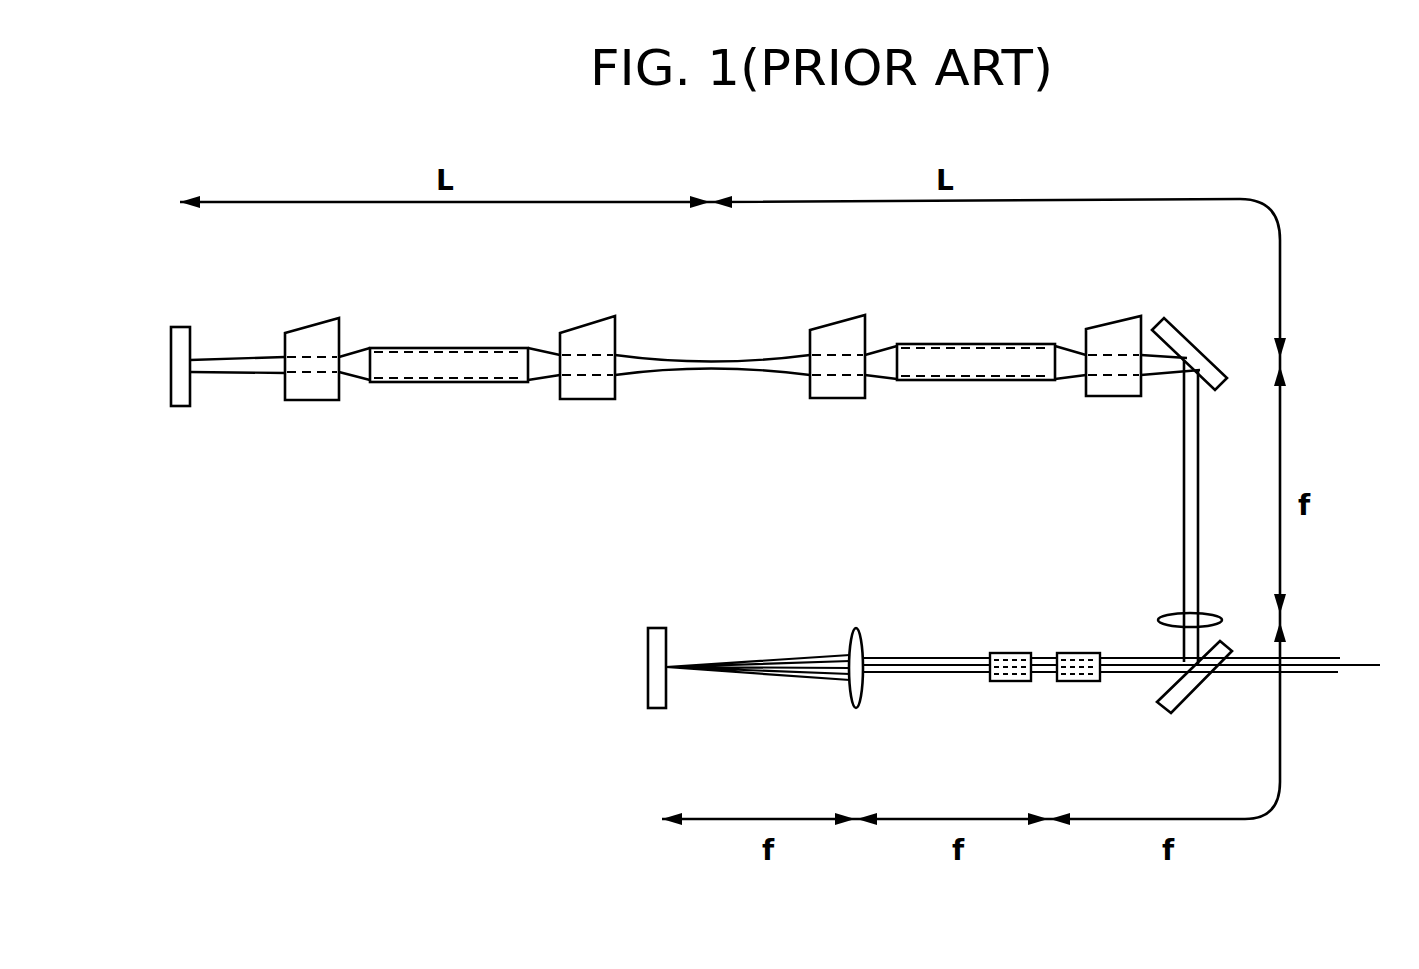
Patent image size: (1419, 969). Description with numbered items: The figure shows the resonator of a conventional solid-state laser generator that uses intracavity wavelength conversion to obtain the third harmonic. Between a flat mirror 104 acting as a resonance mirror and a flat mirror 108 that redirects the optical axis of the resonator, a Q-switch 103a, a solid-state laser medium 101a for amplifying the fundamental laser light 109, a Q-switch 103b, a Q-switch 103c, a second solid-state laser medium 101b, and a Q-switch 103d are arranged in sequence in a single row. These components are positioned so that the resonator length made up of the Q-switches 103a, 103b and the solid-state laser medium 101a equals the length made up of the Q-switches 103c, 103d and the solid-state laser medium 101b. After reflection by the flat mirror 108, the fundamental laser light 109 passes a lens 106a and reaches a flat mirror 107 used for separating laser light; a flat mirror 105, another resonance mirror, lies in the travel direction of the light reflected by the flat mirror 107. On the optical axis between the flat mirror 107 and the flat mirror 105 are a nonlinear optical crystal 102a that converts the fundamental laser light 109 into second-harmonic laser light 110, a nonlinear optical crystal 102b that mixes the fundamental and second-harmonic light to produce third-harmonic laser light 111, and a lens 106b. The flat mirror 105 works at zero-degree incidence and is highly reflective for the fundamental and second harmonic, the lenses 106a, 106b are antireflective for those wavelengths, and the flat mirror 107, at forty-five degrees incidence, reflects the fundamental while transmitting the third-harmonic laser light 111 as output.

The solid-state laser medium 101a is at (440, 383).
The solid-state laser medium 101b is at (985, 381).
The nonlinear optical crystal 102a is at (1012, 682).
The nonlinear optical crystal 102b is at (1078, 682).
The Q-switch 103a is at (311, 318).
The Q-switch 103b is at (588, 318).
The Q-switch 103c is at (838, 318).
The Q-switch 103d is at (1110, 328).
The flat mirror 104 is at (185, 407).
The flat mirror 105 is at (658, 709).
The lens 106a is at (1160, 619).
The lens 106b is at (856, 708).
The flat mirror 107 is at (1182, 704).
The flat mirror 108 is at (1178, 333).
The fundamental laser light 109 is at (713, 372).
The second-harmonic laser light 110 is at (1340, 655).
The third-harmonic laser light 111 is at (1362, 670).